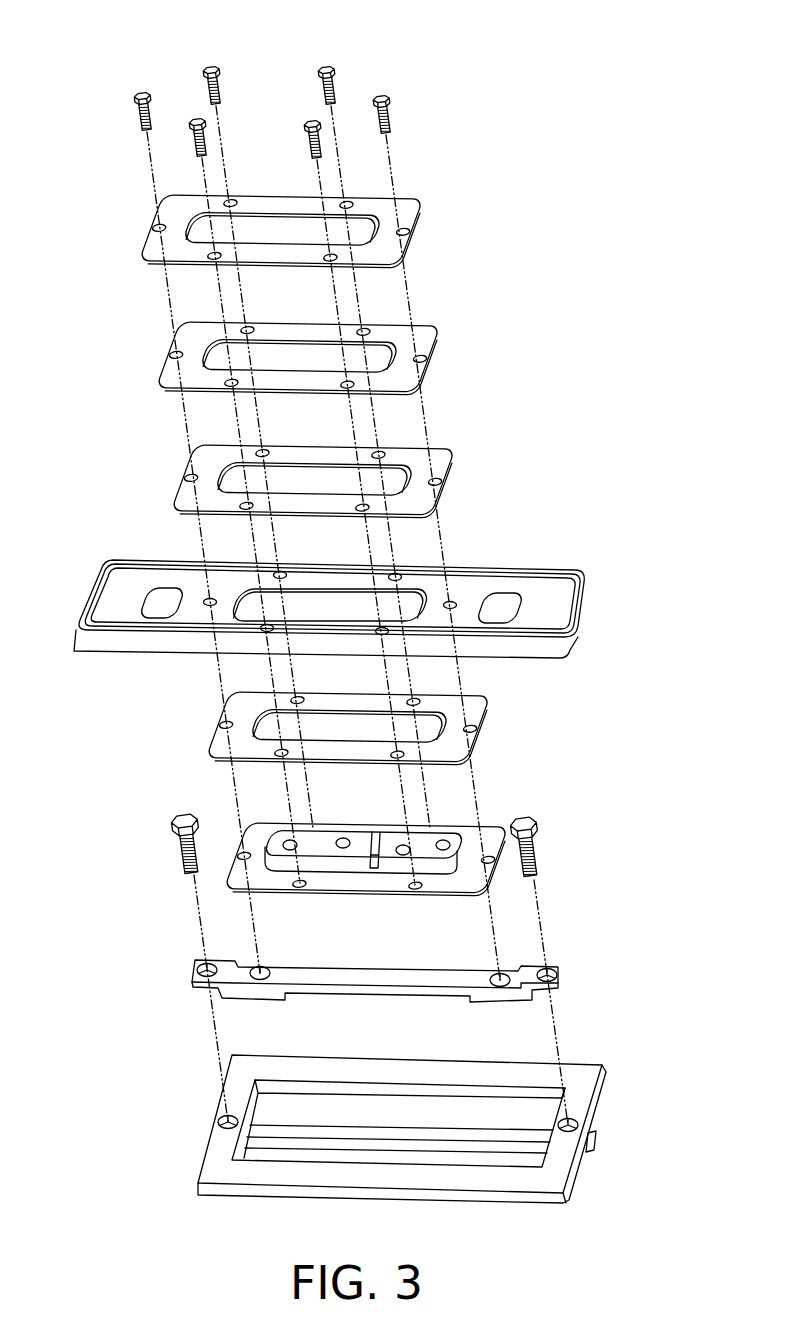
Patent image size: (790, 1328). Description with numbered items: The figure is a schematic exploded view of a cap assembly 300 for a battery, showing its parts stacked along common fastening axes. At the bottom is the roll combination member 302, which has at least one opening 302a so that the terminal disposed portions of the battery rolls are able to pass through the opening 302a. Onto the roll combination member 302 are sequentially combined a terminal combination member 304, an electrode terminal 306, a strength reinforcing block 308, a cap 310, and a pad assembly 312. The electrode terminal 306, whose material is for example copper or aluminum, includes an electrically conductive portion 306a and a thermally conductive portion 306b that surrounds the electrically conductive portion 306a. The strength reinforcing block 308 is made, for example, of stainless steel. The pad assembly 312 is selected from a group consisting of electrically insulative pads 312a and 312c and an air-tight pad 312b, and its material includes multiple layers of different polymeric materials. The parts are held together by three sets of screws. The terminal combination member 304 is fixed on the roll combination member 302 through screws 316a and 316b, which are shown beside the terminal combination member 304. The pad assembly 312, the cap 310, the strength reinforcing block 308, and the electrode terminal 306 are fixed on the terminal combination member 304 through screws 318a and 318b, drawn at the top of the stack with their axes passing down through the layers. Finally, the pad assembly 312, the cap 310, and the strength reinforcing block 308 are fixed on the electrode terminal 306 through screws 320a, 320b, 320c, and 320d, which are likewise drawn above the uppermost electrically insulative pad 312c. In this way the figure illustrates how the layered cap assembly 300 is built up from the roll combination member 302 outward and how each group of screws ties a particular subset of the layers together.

The cap assembly 300 is at (586, 483).
The roll combination member 302 is at (447, 1108).
The opening 302a is at (501, 1098).
The terminal combination member 304 is at (563, 975).
The electrode terminal 306 is at (590, 748).
The electrically conductive portion 306a is at (442, 832).
The thermally conductive portion 306b is at (490, 837).
The strength reinforcing block 308 is at (482, 724).
The cap 310 is at (587, 605).
The pad assembly 312 is at (510, 212).
The electrically insulative pad 312a is at (440, 460).
The air-tight pad 312b is at (427, 337).
The electrically insulative pad 312c is at (408, 212).
The screw 316a is at (543, 860).
The screw 316b is at (183, 855).
The screw 318a is at (392, 116).
The screw 318b is at (140, 116).
The screw 320a is at (310, 145).
The screw 320b is at (333, 90).
The screw 320c is at (196, 145).
The screw 320d is at (220, 96).